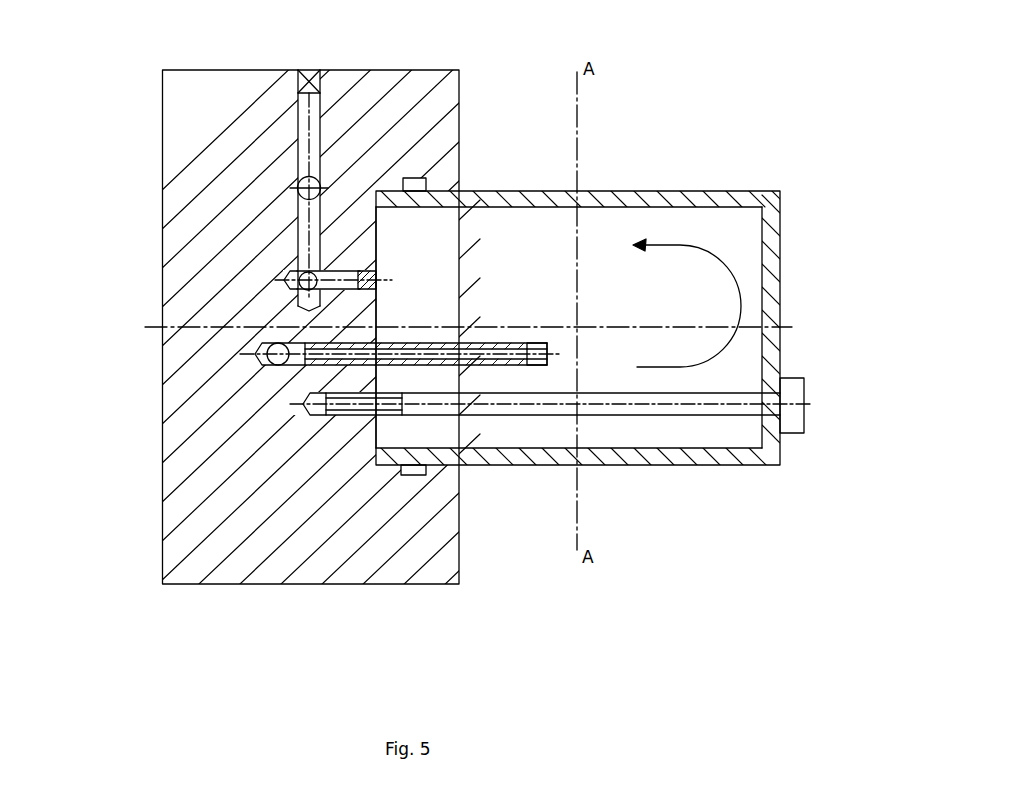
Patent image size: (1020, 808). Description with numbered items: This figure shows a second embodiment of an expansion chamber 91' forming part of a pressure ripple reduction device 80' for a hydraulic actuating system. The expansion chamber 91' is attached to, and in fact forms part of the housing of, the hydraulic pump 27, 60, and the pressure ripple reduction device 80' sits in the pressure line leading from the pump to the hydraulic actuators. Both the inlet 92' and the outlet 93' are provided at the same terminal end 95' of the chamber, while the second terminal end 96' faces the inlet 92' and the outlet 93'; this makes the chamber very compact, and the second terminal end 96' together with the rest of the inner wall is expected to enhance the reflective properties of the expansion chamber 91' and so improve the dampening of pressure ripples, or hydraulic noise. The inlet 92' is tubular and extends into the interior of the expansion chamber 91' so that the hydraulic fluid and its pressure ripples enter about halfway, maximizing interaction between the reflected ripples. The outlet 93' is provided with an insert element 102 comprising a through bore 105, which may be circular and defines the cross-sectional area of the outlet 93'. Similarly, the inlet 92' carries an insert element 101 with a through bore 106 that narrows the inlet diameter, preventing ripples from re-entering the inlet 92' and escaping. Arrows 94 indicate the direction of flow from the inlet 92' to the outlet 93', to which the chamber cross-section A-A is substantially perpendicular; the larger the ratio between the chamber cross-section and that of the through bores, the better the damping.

The hydraulic pump 27 is at (263, 404).
The hydraulic pump 60 is at (263, 404).
The terminal end 95' is at (263, 404).
The through bore 105 is at (388, 200).
The insert element 102 is at (373, 291).
The pressure ripple reduction device 80' is at (555, 364).
The expansion chamber 91' is at (623, 302).
The second terminal end 96' is at (626, 328).
The outlet 93' is at (464, 278).
The arrows 94 is at (660, 243).
The through bore 106 is at (443, 438).
The insert element 101 is at (547, 346).
The inlet 92' is at (596, 446).